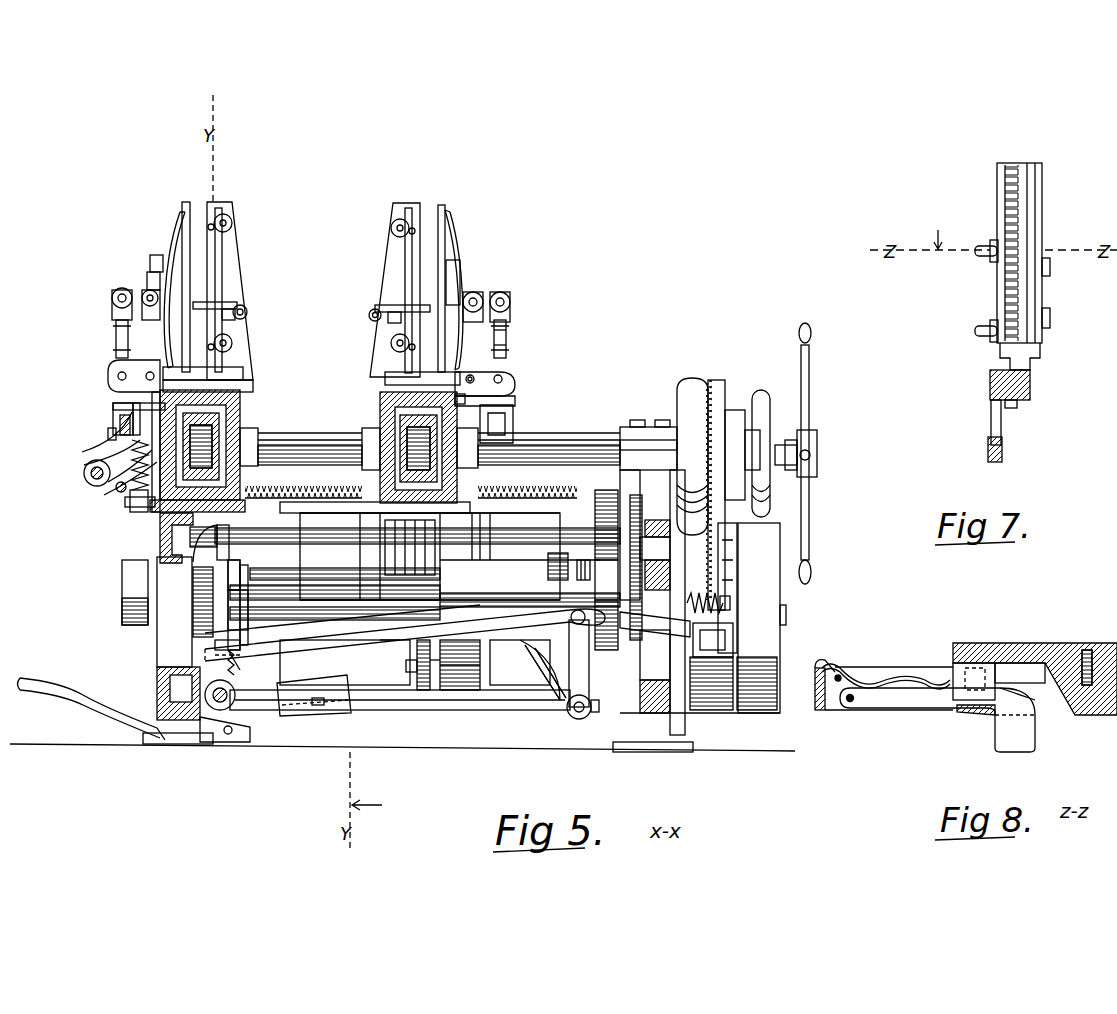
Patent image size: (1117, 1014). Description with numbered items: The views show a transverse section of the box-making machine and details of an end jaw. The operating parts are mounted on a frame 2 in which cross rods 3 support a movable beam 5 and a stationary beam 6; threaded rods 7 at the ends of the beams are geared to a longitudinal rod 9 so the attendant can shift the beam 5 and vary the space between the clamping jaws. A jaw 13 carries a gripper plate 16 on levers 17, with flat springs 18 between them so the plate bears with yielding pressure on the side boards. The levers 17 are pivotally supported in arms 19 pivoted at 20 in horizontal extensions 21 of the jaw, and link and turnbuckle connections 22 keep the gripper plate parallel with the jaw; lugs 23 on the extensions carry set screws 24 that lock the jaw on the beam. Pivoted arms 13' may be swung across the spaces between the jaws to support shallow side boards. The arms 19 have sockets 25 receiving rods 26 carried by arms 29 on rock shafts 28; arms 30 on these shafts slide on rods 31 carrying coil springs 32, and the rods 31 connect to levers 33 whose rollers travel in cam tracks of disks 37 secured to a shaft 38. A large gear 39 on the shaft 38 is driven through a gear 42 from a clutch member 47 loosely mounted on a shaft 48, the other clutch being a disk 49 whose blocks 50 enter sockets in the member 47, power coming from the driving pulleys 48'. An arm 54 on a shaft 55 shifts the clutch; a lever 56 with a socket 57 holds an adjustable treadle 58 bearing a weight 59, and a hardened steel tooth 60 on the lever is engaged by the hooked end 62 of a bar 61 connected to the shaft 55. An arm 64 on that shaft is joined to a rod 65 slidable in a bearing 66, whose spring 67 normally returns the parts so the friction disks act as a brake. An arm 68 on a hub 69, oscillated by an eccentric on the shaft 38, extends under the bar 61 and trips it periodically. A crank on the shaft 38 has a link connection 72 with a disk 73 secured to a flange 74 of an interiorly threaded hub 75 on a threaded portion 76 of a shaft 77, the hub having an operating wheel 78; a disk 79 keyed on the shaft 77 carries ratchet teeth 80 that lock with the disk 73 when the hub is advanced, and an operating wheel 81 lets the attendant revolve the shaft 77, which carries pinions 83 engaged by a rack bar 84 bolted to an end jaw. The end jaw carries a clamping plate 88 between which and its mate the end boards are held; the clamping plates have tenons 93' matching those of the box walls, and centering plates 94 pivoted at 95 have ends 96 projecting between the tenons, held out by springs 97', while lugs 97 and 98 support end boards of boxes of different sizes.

In FIG. 5, the frame 2 is at (160, 632).
In FIG. 5, the cross rods 3 is at (317, 530).
In FIG. 5, the movable beam 5 is at (380, 410).
In FIG. 5, the stationary beam 6 is at (240, 410).
In FIG. 5, the threaded rods 7 is at (286, 490).
In FIG. 5, the longitudinal rod 9 is at (100, 485).
In FIG. 5, the jaw 13 is at (311, 297).
In FIG. 5, the arms 13' is at (311, 297).
In FIG. 5, the gripper plate 16 is at (182, 246).
In FIG. 5, the levers 17 is at (140, 296).
In FIG. 5, the flat springs 18 is at (182, 214).
In FIG. 5, the arms 19 is at (505, 338).
In FIG. 5, the pivot 20 is at (500, 375).
In FIG. 5, the horizontal extensions 21 is at (515, 382).
In FIG. 5, the link and turnbuckle connections 22 is at (505, 350).
In FIG. 5, the lugs 23 is at (462, 400).
In FIG. 5, the set screws 24 is at (515, 398).
In FIG. 5, the sockets 25 is at (118, 410).
In FIG. 5, the rods 26 is at (120, 420).
In FIG. 5, the rock shafts 28 is at (95, 473).
In FIG. 5, the arms 29 is at (110, 432).
In FIG. 5, the arms 30 is at (112, 445).
In FIG. 5, the rods 31 is at (138, 498).
In FIG. 5, the coil springs 32 is at (124, 490).
In FIG. 5, the levers 33 is at (160, 545).
In FIG. 5, the disks 37 is at (122, 608).
In FIG. 5, the shaft 38 is at (350, 550).
In FIG. 5, the large gear 39 is at (606, 495).
In FIG. 5, the gear 42 is at (548, 562).
In FIG. 5, the clutch member 47 is at (468, 672).
In FIG. 5, the shaft 48 is at (783, 618).
In FIG. 5, the driving pulleys 48' is at (757, 699).
In FIG. 5, the clutch disk 49 is at (423, 690).
In FIG. 5, the blocks 50 is at (452, 672).
In FIG. 5, the arm 54 is at (477, 664).
In FIG. 5, the shaft 55 is at (580, 719).
In FIG. 5, the lever 56 is at (270, 685).
In FIG. 5, the socket 57 is at (218, 742).
In FIG. 5, the treadle 58 is at (105, 705).
In FIG. 5, the weight 59 is at (352, 718).
In FIG. 5, the hardened steel tooth 60 is at (405, 659).
In FIG. 5, the bar 61 is at (385, 642).
In FIG. 5, the hooked end 62 is at (232, 645).
In FIG. 5, the arm 64 is at (560, 690).
In FIG. 5, the rod 65 is at (722, 605).
In FIG. 5, the bearing 66 is at (635, 637).
In FIG. 5, the spring 67 is at (733, 622).
In FIG. 5, the arm 68 is at (245, 600).
In FIG. 5, the hub 69 is at (240, 572).
In FIG. 5, the link connection 72 is at (740, 660).
In FIG. 5, the disk 73 is at (716, 385).
In FIG. 5, the flange 74 is at (735, 415).
In FIG. 5, the interiorly threaded hub 75 is at (752, 440).
In FIG. 5, the threaded portion 76 is at (818, 452).
In FIG. 5, the shaft 77 is at (575, 447).
In FIG. 5, the operating wheel 78 is at (770, 500).
In FIG. 5, the disk 79 is at (682, 390).
In FIG. 5, the ratchet teeth 80 is at (708, 385).
In FIG. 5, the operating wheel 81 is at (812, 373).
In FIG. 5, the pinions 83 is at (205, 448).
In FIG. 7, the rack bar 84 is at (1020, 398).
In FIG. 7, the clamping plate 88 is at (1042, 192).
In FIG. 8, the clamping plate 88 is at (1000, 650).
In FIG. 7, the tenons 93' is at (1028, 232).
In FIG. 8, the tenons 93' is at (1050, 720).
In FIG. 7, the centering plates 94 is at (978, 328).
In FIG. 8, the centering plates 94 is at (965, 715).
In FIG. 8, the pivot 95 is at (850, 702).
In FIG. 7, the ends 96 is at (1012, 332).
In FIG. 8, the ends 96 is at (1010, 748).
In FIG. 7, the lug 97 is at (1065, 270).
In FIG. 8, the springs 97' is at (882, 664).
In FIG. 7, the lug 98 is at (1040, 350).